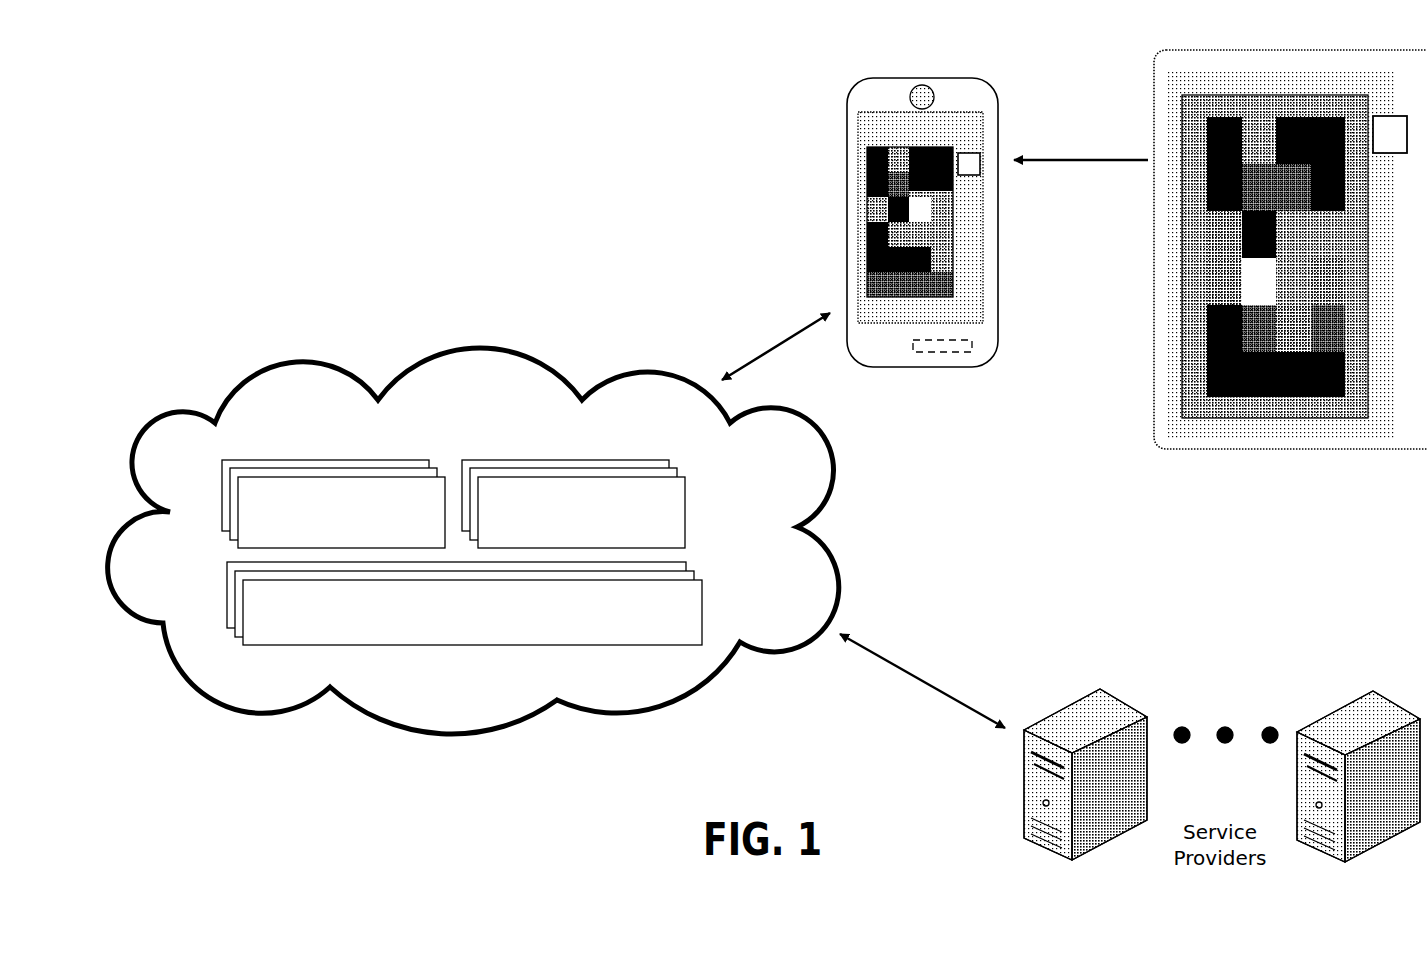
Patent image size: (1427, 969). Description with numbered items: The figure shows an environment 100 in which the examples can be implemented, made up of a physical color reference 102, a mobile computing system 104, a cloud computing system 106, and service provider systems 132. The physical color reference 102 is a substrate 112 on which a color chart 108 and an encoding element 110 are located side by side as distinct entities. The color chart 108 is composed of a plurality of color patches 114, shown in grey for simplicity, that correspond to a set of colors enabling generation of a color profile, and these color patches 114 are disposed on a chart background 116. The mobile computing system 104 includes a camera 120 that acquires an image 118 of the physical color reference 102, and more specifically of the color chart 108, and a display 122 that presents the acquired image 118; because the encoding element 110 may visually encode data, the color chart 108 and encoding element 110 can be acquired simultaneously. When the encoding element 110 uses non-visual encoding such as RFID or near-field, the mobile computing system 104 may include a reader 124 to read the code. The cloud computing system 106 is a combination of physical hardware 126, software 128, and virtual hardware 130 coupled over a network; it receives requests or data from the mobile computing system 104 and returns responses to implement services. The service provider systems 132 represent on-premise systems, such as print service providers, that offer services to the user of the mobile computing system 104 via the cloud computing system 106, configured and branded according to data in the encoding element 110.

The environment 100 is at (248, 99).
The physical color reference 102 is at (1243, 269).
The mobile computing system 104 is at (870, 217).
The cloud computing system 106 is at (723, 673).
The color chart 108 is at (1263, 418).
The encoding element 110 is at (1388, 137).
The substrate 112 is at (1391, 422).
The color patches 114 is at (1207, 316).
The chart background 116 is at (1188, 405).
The image 118 is at (864, 136).
The camera 120 is at (921, 88).
The display 122 is at (857, 233).
The reader 124 is at (963, 354).
The physical hardware 126 is at (702, 622).
The software 128 is at (685, 502).
The virtual hardware 130 is at (287, 459).
The service provider systems 132 is at (1087, 705).